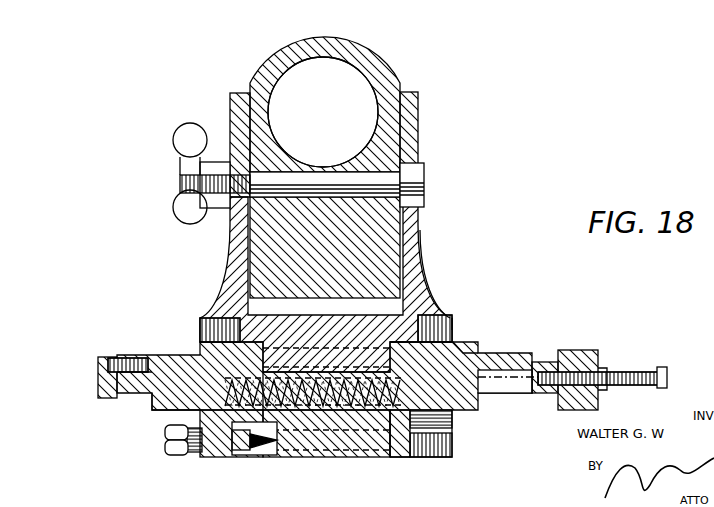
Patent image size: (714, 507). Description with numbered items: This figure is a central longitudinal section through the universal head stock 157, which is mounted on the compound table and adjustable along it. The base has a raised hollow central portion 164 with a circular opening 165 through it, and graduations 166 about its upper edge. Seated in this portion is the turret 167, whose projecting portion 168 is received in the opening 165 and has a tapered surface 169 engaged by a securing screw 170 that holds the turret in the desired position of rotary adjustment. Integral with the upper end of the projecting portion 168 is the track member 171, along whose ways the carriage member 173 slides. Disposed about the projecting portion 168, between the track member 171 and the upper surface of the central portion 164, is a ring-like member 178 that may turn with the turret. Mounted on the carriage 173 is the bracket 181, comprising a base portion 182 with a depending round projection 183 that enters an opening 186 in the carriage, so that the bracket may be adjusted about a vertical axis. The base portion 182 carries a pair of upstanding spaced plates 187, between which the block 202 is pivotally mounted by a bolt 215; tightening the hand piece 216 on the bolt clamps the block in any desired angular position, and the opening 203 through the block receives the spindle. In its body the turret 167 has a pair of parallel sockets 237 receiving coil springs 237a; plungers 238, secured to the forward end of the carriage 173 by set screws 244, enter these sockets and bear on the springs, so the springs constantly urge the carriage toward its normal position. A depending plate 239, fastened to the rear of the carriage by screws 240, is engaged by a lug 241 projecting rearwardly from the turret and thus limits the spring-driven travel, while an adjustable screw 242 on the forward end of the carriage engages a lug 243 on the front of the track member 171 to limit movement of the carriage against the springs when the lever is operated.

The universal head stock 157 is at (474, 203).
The raised hollow central portion 164 is at (407, 455).
The circular opening 165 is at (268, 457).
The graduations 166 is at (452, 432).
The turret 167 is at (146, 417).
The projecting portion 168 is at (318, 443).
The tapered surface 169 is at (388, 455).
The securing screw 170 is at (236, 458).
The track member 171 is at (148, 414).
The carriage member 173 is at (460, 345).
The ring-like member 178 is at (452, 416).
The bracket 181 is at (210, 253).
The base portion 182 is at (453, 332).
The round projection 183 is at (441, 322).
The opening 186 is at (453, 340).
The upstanding spaced plates 187 is at (230, 103).
The block 202 is at (390, 77).
The opening 203 is at (350, 60).
The bolt 215 is at (385, 178).
The hand piece 216 is at (184, 134).
The parallel sockets 237 is at (342, 450).
The coil springs 237a is at (297, 443).
The plungers 238 is at (550, 395).
The depending plate 239 is at (100, 385).
The screws 240 is at (108, 358).
The lug 241 is at (130, 392).
The adjustable screw 242 is at (643, 372).
The lug 243 is at (503, 385).
The set screws 244 is at (600, 398).